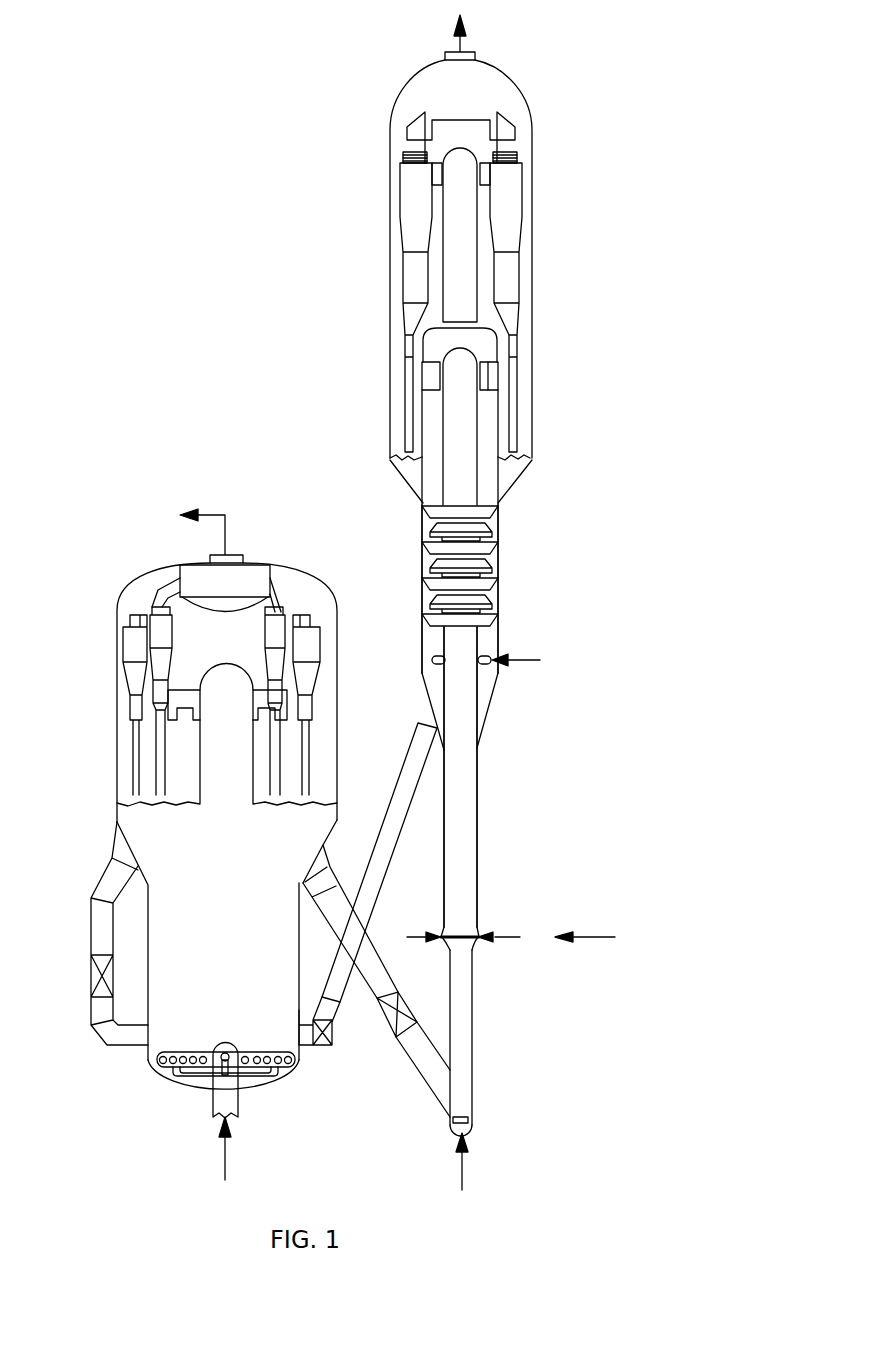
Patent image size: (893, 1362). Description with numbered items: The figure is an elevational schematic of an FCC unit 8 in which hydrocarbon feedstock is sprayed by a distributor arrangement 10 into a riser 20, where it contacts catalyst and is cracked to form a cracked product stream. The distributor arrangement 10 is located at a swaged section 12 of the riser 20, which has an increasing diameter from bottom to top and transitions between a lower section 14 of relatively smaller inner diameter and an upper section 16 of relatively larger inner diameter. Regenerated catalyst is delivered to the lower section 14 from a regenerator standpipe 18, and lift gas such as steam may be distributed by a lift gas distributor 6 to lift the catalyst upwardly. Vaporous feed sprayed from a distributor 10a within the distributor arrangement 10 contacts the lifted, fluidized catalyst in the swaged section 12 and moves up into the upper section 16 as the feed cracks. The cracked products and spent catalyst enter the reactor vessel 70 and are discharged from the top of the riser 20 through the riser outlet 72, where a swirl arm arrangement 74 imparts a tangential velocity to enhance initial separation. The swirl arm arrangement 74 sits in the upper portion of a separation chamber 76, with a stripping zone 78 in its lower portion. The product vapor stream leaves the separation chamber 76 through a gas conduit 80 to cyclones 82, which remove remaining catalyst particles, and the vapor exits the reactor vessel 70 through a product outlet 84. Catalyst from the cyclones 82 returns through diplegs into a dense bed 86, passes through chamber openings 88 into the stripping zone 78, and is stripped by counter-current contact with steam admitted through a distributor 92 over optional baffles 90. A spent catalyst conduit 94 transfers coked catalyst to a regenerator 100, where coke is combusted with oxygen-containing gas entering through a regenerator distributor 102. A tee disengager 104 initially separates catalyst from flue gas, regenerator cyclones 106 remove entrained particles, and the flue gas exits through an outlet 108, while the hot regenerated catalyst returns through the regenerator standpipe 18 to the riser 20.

The lift gas distributor 6 is at (450, 1116).
The FCC unit 8 is at (182, 300).
The distributor arrangement 10 is at (535, 947).
The distributor 10a is at (470, 920).
The swaged section 12 is at (476, 948).
The lower section 14 is at (474, 1013).
The upper section 16 is at (444, 818).
The regenerator standpipe 18 is at (370, 995).
The riser 20 is at (478, 838).
The reactor vessel 70 is at (533, 246).
The riser outlet 72 is at (490, 372).
The swirl arm arrangement 74 is at (438, 360).
The separation chamber 76 is at (495, 410).
The stripping zone 78 is at (500, 530).
The gas conduit 80 is at (470, 276).
The cyclones 82 is at (410, 190).
The product outlet 84 is at (470, 58).
The dense bed 86 is at (392, 462).
The chamber openings 88 is at (417, 484).
The baffles 90 is at (490, 586).
The distributor 92 is at (487, 667).
The spent catalyst conduit 94 is at (402, 775).
The regenerator 100 is at (117, 822).
The regenerator distributor 102 is at (216, 1110).
The tee disengager 104 is at (178, 697).
The regenerator cyclones 106 is at (138, 640).
The outlet 108 is at (232, 557).